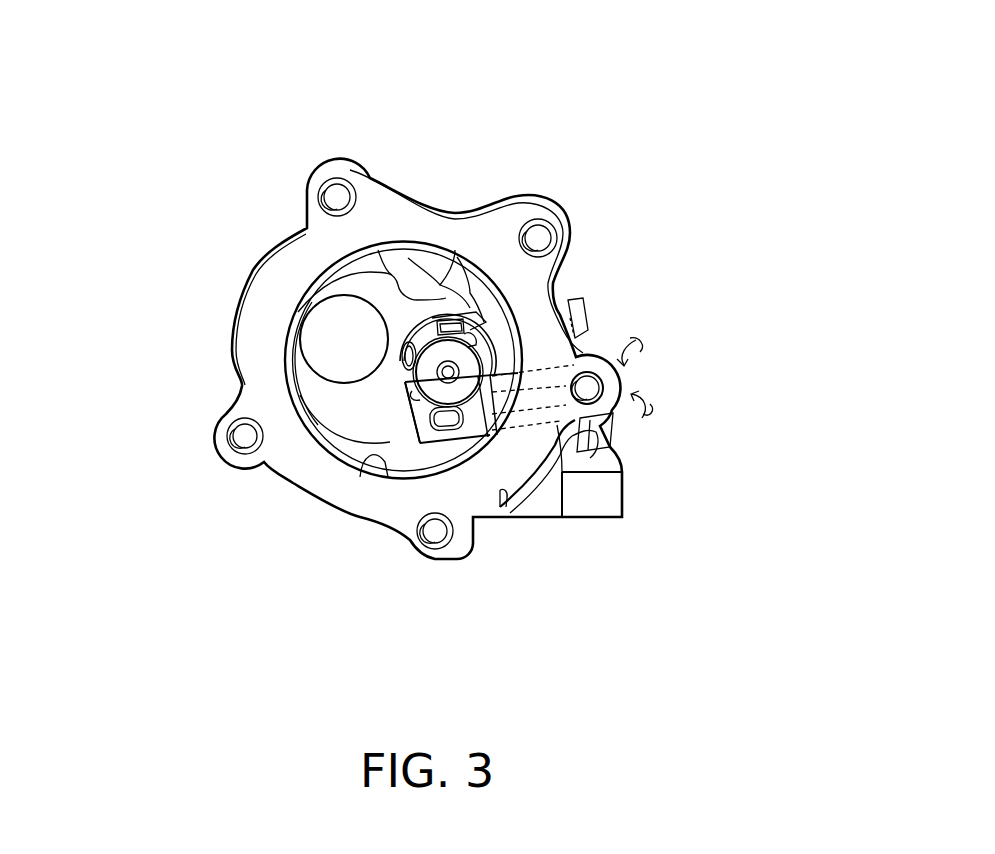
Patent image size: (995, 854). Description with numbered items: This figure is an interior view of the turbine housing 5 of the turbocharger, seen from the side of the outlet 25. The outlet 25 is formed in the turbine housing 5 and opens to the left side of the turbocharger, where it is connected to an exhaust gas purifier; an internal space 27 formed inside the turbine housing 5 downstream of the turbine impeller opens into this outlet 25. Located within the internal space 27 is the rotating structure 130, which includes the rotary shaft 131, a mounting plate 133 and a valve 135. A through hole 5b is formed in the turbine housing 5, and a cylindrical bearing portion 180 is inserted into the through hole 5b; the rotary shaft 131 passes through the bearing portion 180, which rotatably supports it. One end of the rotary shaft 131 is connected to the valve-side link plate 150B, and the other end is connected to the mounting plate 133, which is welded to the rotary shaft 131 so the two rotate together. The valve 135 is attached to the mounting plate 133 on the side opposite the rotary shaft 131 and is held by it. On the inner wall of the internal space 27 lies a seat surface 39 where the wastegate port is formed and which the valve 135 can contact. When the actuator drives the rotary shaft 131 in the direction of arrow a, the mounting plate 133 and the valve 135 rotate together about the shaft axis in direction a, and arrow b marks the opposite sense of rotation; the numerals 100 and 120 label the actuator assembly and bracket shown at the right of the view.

The turbine housing 5 is at (348, 82).
The through hole 5b is at (556, 453).
The outlet 25 is at (361, 457).
The internal space 27 is at (358, 413).
The seat surface 39 is at (493, 330).
The actuator assembly 100 is at (750, 186).
The bracket 120 is at (688, 265).
The rotating structure 130 is at (148, 271).
The rotary shaft 131 is at (457, 445).
The mounting plate 133 is at (410, 404).
The valve 135 is at (390, 348).
The valve-side link plate 150B is at (590, 327).
The bearing portion 180 is at (515, 358).
The arrow a is at (640, 349).
The rotation direction b is at (650, 406).